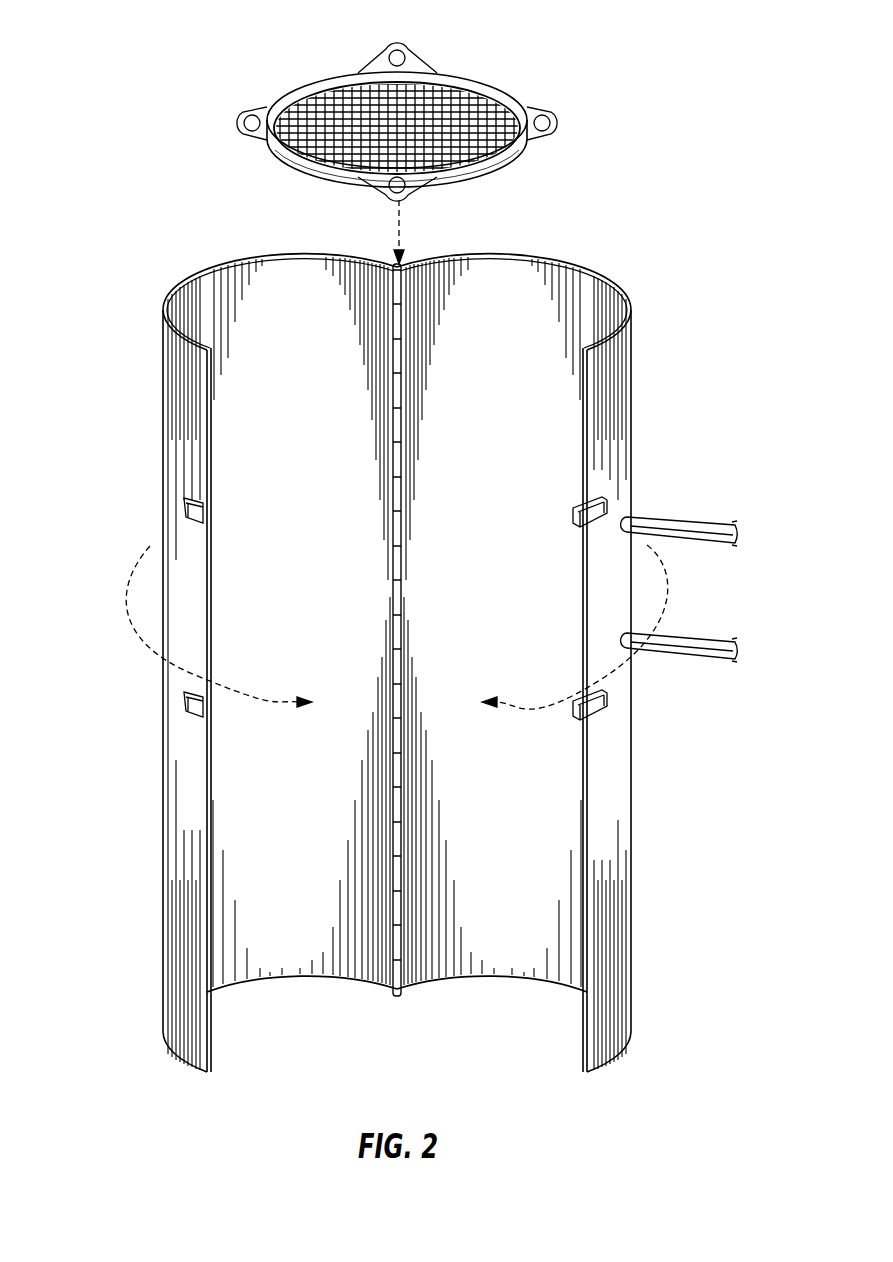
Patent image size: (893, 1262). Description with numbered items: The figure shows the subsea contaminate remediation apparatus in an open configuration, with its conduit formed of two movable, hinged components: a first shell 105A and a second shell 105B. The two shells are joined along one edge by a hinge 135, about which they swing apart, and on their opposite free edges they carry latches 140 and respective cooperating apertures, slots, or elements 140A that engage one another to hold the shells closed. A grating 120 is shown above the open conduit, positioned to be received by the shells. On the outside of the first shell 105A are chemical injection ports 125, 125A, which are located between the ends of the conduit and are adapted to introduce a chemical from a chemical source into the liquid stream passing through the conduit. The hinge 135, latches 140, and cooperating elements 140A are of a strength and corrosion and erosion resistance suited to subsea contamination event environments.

The grating 120 is at (450, 88).
The first shell 105A is at (631, 362).
The second shell 105B is at (163, 362).
The hinge 135 is at (394, 566).
The cooperating element 140A is at (186, 508).
The latch 140 is at (574, 516).
The chemical injection port 125 is at (683, 517).
The chemical injection port 125A is at (683, 660).